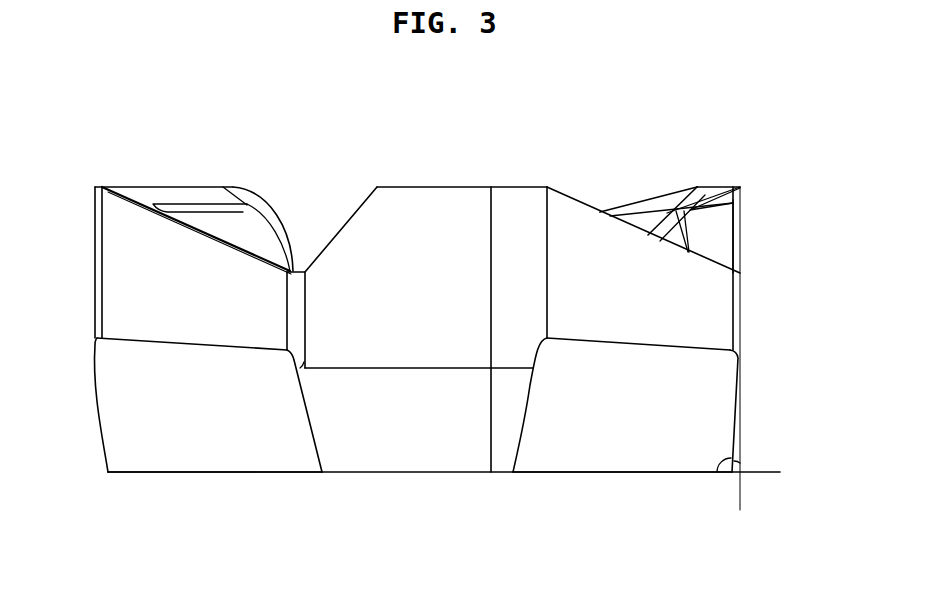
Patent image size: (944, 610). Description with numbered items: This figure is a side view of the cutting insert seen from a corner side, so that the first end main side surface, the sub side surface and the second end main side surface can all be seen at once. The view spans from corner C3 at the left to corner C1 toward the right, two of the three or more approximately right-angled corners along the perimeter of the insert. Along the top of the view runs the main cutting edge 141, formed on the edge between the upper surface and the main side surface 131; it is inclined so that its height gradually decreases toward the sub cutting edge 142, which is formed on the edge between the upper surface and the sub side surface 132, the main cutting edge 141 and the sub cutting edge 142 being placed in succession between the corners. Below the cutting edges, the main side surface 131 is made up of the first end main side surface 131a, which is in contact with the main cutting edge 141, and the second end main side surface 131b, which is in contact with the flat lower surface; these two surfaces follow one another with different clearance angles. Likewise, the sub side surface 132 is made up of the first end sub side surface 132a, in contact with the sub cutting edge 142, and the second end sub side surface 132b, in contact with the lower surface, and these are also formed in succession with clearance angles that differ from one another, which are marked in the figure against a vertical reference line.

The main side surface 131 is at (222, 548).
The first end main side surface 131a is at (158, 317).
The second end main side surface 131b is at (232, 457).
The sub side surface 132 is at (428, 548).
The first end sub side surface 132a is at (740, 293).
The second end sub side surface 132b is at (737, 432).
The main cutting edge 141 is at (208, 228).
The sub cutting edge 142 is at (423, 187).
The corner C1 is at (515, 187).
The corner C3 is at (93, 187).